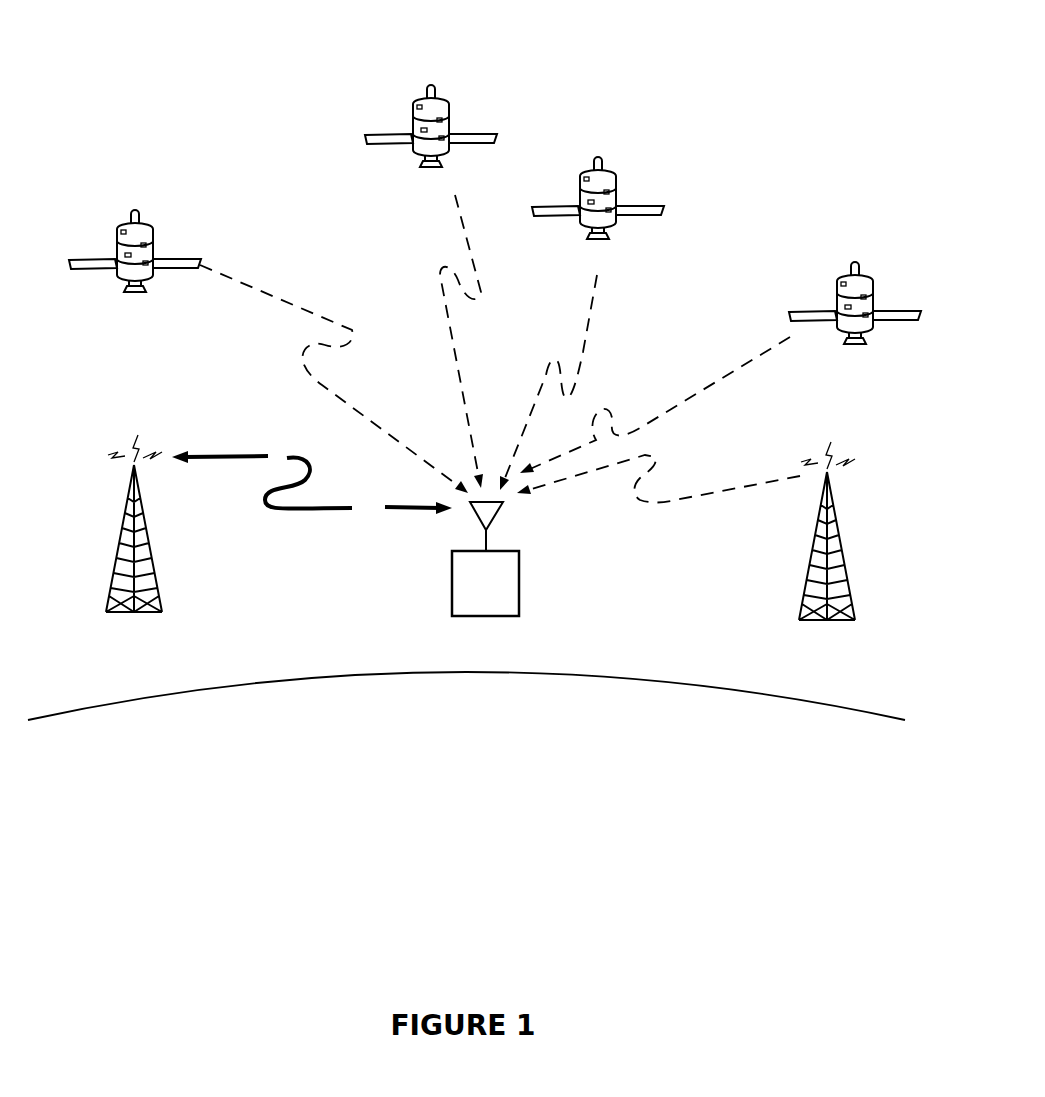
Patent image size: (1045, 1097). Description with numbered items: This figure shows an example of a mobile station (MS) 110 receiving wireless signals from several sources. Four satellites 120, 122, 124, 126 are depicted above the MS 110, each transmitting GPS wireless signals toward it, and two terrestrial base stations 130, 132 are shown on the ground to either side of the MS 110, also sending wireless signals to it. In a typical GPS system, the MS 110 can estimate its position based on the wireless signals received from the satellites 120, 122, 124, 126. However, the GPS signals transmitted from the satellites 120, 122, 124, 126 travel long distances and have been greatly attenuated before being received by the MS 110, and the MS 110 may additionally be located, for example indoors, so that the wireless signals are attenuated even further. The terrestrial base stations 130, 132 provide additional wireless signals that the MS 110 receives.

The mobile station 110 is at (485, 559).
The satellite 120 is at (138, 222).
The satellite 122 is at (458, 110).
The satellite 124 is at (602, 166).
The satellite 126 is at (852, 276).
The terrestrial base station 130 is at (115, 443).
The terrestrial base station 132 is at (815, 455).